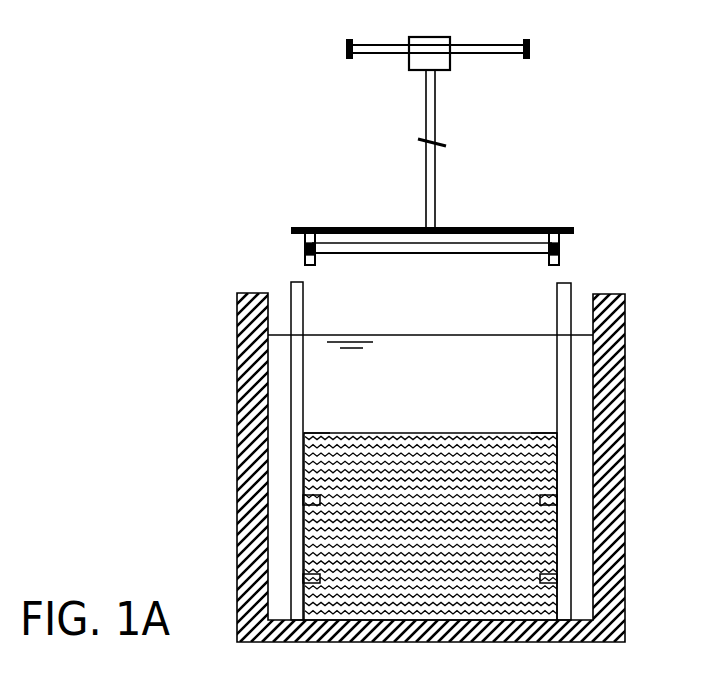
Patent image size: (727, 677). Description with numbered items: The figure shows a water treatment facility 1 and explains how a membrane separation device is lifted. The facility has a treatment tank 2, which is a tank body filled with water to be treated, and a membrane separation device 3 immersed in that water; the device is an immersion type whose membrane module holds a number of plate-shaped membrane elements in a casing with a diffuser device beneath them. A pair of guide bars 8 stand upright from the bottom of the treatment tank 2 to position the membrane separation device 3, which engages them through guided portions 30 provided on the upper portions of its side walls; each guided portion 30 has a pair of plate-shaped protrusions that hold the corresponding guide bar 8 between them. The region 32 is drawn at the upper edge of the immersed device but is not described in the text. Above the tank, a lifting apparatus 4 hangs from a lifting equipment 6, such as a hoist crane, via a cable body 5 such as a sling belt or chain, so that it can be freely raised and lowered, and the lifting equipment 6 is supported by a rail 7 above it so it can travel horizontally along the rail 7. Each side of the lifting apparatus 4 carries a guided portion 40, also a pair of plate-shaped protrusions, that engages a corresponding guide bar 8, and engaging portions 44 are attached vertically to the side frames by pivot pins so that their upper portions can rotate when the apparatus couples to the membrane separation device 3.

The water treatment facility 1 is at (298, 125).
The treatment tank 2 is at (622, 300).
The membrane separation device 3 is at (430, 526).
The lifting apparatus 4 is at (498, 228).
The cable body 5 is at (436, 183).
The lifting equipment 6 is at (415, 72).
The rail 7 is at (505, 56).
The guide bar 8 is at (303, 312).
The guided portion 30 is at (305, 500).
The material surface 32 is at (310, 433).
The guided portion 40 is at (298, 227).
The engaging portion 44 is at (305, 253).